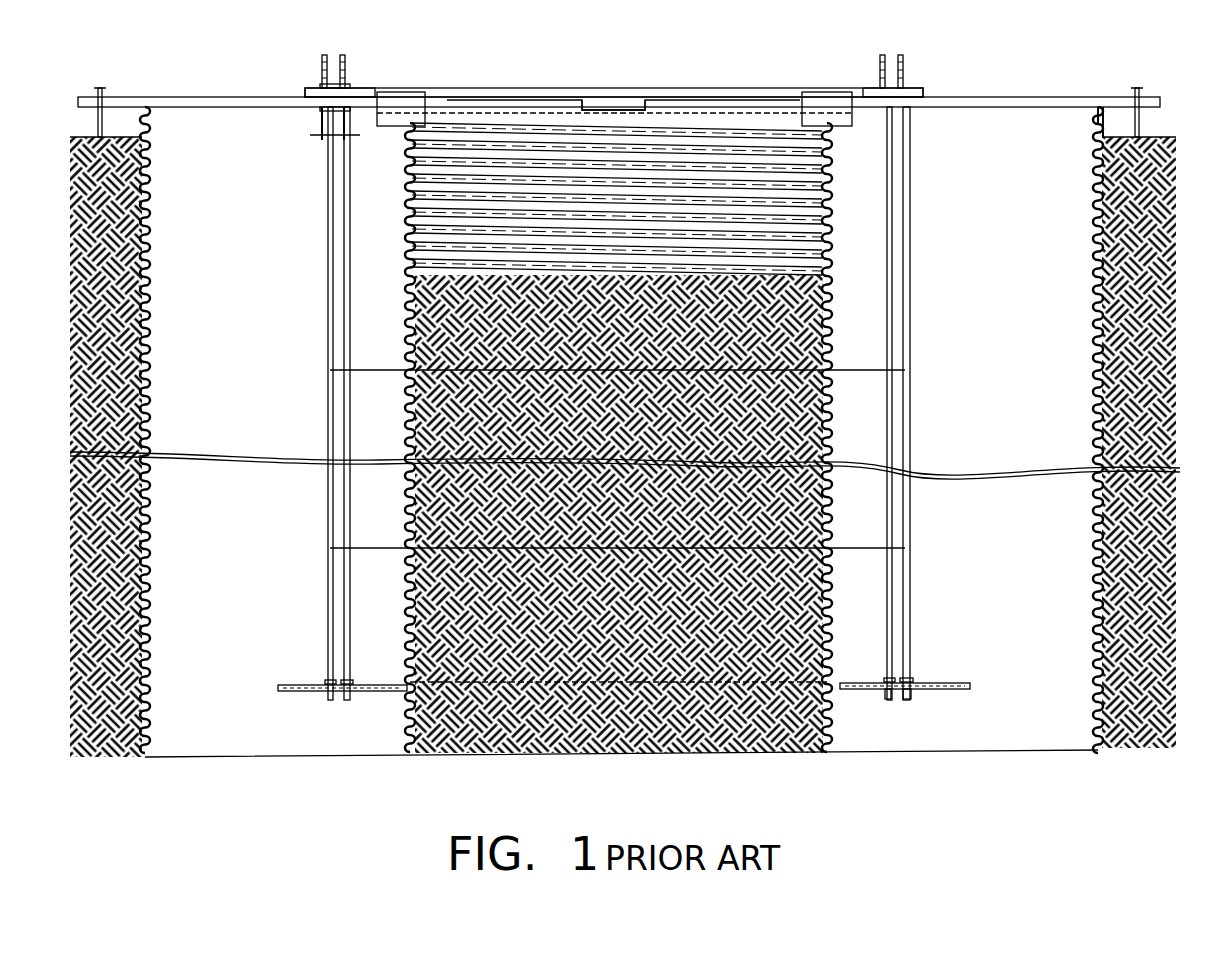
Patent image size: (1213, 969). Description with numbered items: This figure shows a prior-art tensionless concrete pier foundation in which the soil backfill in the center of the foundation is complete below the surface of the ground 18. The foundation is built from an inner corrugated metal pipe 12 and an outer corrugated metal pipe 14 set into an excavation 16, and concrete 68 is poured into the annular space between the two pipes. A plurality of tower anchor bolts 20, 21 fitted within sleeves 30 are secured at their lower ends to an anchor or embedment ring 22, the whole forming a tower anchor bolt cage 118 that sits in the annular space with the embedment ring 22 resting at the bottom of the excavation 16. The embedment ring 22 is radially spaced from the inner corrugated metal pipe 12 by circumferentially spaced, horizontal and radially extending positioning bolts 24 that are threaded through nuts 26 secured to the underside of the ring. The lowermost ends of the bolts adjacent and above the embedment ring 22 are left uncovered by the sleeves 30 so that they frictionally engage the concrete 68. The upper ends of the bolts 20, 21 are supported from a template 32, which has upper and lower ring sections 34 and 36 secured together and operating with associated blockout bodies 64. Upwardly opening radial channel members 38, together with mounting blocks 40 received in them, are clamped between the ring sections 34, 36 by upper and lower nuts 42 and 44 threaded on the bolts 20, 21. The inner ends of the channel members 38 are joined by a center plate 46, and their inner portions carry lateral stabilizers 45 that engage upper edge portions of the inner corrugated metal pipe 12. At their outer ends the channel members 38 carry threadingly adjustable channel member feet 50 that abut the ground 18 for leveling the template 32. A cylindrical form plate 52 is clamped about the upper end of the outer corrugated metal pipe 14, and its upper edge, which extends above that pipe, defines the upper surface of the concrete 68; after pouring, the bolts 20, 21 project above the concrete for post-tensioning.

The inner corrugated metal pipe 12 is at (752, 125).
The outer corrugated metal pipe 14 is at (1092, 305).
The excavation 16 is at (1122, 748).
The ground 18 is at (1108, 110).
The tower anchor bolt 20 is at (343, 56).
The tower anchor bolt 21 is at (322, 57).
The anchor or embedment ring 22 is at (908, 662).
The positioning bolt 24 is at (860, 695).
The nut 26 is at (906, 699).
The sleeve 30 is at (905, 432).
The template 32 is at (408, 90).
The upper ring section 34 is at (350, 90).
The lower ring section 36 is at (320, 110).
The radial channel member 38 is at (513, 98).
The mounting block 40 is at (305, 92).
The upper nut 42 is at (352, 86).
The lower nut 44 is at (314, 120).
The lateral stabilizer 45 is at (426, 95).
The center plate 46 is at (605, 110).
The channel member foot 50 is at (90, 136).
The cylindrical form plate 52 is at (1098, 120).
The blockout body 64 is at (377, 130).
The concrete 68 is at (300, 730).
The tower anchor bolt cage 118 is at (918, 520).